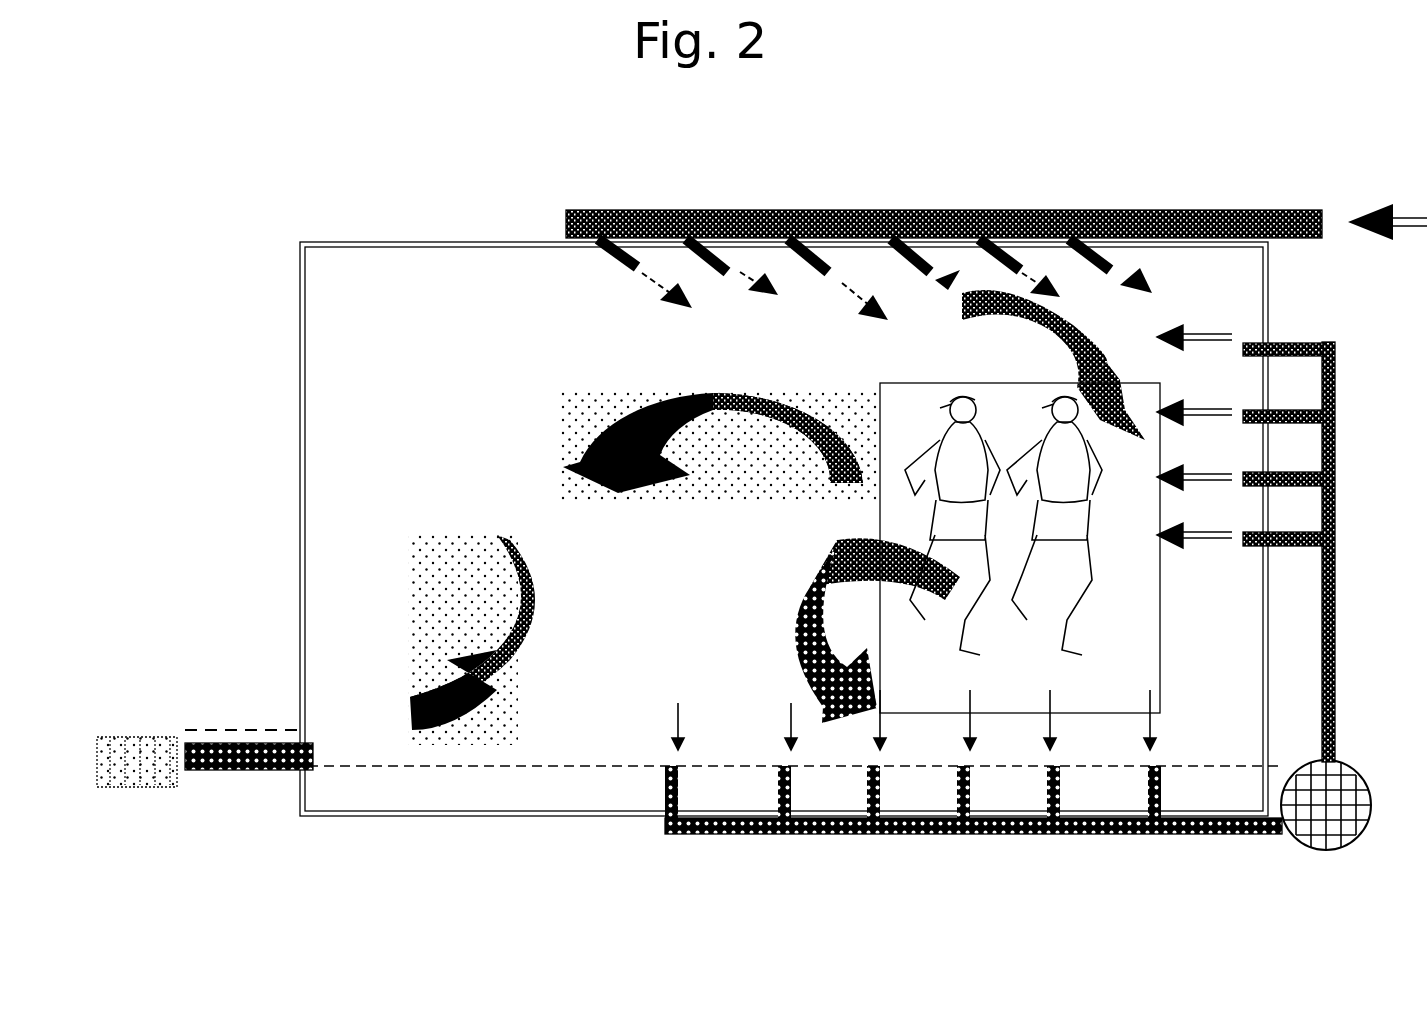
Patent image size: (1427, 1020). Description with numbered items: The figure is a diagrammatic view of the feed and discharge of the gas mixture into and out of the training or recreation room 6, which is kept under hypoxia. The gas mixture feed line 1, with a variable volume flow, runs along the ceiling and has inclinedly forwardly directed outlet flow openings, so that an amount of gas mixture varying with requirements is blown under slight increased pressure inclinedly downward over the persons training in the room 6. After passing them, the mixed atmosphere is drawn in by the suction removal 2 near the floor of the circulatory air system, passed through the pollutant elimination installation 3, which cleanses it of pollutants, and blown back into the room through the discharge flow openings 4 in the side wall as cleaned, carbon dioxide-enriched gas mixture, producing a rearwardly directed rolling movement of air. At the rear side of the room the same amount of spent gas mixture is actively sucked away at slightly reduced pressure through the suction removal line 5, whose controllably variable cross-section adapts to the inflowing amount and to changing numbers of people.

The gas mixture feed line 1 is at (996, 228).
The suction removal near the floor 2 is at (795, 801).
The pollutant elimination installation 3 is at (1354, 805).
The discharge flow openings 4 is at (1292, 543).
The suction removal line 5 is at (205, 717).
The training or recreation room 6 is at (784, 529).